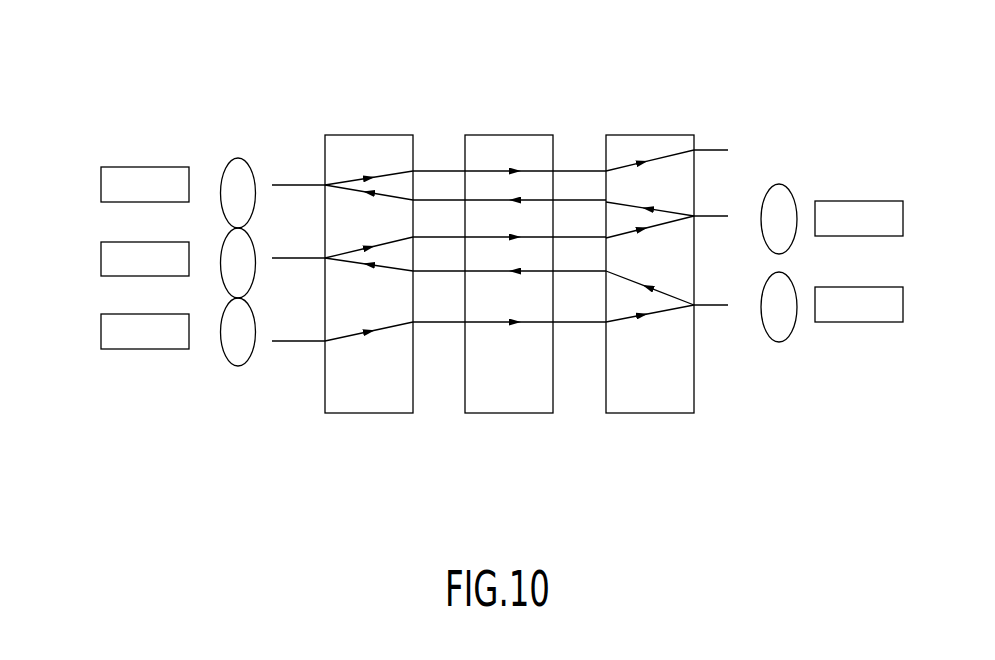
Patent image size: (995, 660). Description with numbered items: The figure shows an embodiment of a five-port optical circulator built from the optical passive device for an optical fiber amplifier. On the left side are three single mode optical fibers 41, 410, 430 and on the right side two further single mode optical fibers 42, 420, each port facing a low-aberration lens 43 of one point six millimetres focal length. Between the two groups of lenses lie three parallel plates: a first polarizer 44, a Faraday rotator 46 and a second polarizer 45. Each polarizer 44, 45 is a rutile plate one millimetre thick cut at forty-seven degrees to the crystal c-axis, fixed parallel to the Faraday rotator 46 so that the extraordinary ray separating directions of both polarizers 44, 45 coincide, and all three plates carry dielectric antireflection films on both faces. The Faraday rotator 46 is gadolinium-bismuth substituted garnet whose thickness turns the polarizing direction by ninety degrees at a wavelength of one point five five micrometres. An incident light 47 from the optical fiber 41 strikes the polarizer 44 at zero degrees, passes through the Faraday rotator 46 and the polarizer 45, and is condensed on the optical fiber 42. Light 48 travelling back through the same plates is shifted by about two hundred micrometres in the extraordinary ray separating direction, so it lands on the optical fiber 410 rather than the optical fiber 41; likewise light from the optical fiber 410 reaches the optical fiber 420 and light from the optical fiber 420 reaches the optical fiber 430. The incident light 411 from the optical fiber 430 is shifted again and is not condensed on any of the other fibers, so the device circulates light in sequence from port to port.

The optical fiber 41 is at (152, 350).
The optical fiber 410 is at (101, 251).
The optical fiber 430 is at (124, 167).
The lens 43 is at (243, 158).
The polarizer 44 is at (373, 135).
The Faraday rotator 46 is at (511, 135).
The polarizer 45 is at (647, 136).
The incident light 47 is at (307, 342).
The incident light 48 is at (667, 293).
The incident light 411 is at (712, 150).
The optical fiber 42 is at (870, 323).
The optical fiber 420 is at (853, 201).